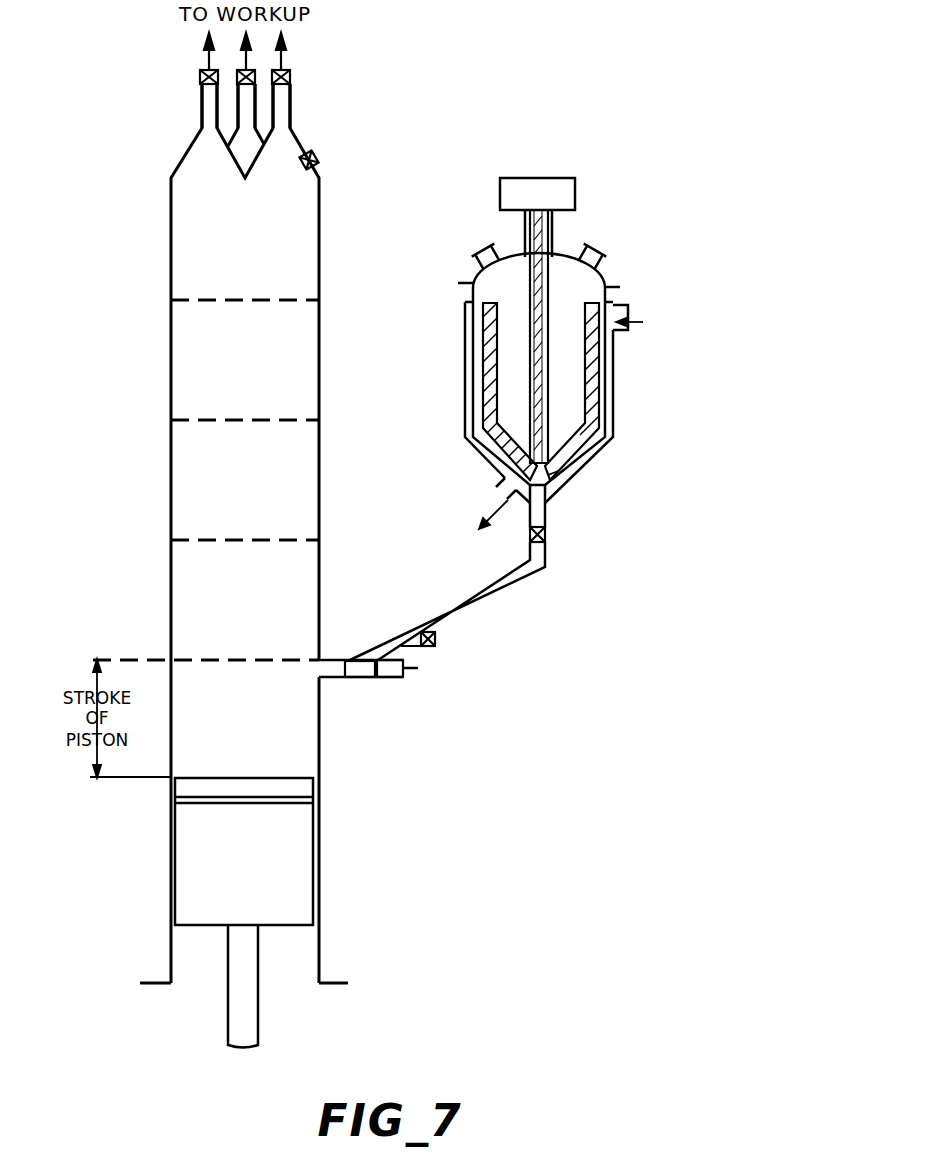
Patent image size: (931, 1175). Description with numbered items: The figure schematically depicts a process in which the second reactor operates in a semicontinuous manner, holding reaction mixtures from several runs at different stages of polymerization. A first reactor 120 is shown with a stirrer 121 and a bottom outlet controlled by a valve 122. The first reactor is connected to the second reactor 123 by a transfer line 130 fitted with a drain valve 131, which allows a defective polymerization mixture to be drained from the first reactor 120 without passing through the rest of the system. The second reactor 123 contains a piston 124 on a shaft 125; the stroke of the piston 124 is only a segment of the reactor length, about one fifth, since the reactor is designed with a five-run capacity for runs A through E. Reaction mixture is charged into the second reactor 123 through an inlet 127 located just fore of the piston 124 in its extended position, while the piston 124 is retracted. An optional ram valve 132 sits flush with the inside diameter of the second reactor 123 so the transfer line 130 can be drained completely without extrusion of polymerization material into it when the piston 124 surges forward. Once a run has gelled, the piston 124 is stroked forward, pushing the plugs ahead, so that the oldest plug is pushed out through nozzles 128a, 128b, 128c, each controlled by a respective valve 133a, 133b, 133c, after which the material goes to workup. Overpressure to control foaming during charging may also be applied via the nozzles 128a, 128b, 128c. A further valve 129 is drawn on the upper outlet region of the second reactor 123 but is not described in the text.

The first reactor 120 is at (612, 264).
The stirrer 121 is at (532, 371).
The valve 122 is at (546, 535).
The second reactor 123 is at (165, 404).
The piston 124 is at (277, 858).
The shaft 125 is at (245, 1008).
The inlet 127 is at (330, 680).
The nozzle 128a is at (201, 107).
The nozzle 128b is at (293, 115).
The nozzle 128c is at (254, 105).
The valve 129 is at (322, 160).
The transfer line 130 is at (537, 570).
The drain valve 131 is at (437, 640).
The ram valve 132 is at (372, 677).
The valve 133a is at (200, 78).
The valve 133b is at (291, 78).
The valve 133c is at (238, 69).